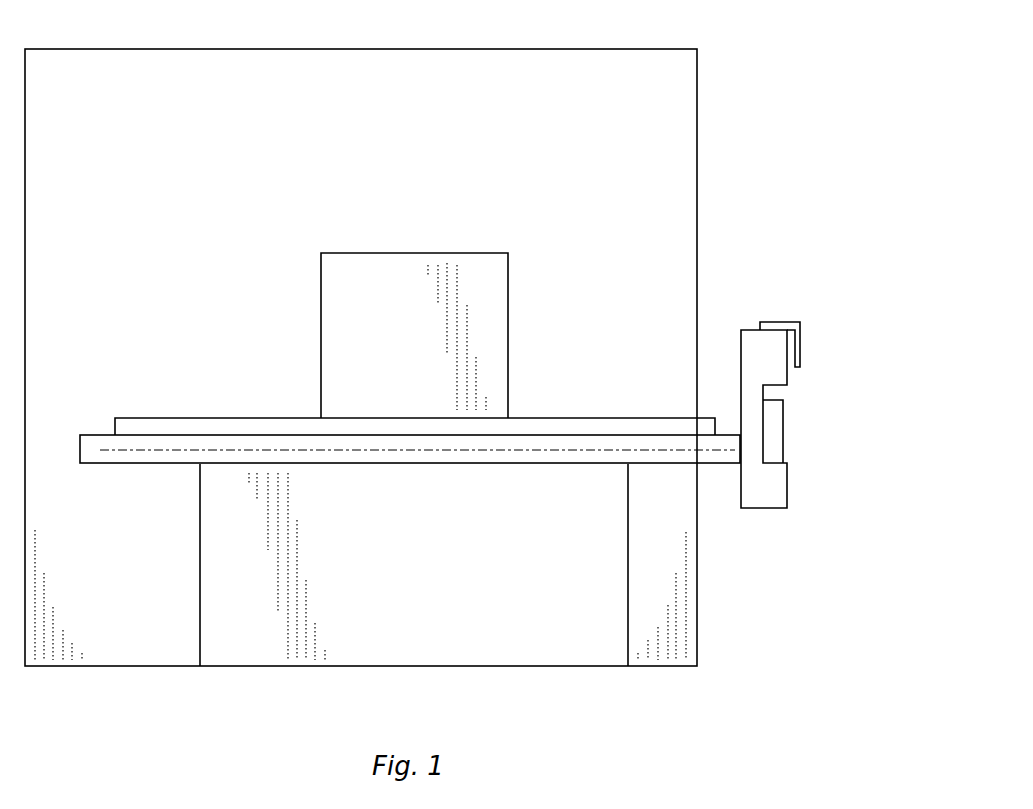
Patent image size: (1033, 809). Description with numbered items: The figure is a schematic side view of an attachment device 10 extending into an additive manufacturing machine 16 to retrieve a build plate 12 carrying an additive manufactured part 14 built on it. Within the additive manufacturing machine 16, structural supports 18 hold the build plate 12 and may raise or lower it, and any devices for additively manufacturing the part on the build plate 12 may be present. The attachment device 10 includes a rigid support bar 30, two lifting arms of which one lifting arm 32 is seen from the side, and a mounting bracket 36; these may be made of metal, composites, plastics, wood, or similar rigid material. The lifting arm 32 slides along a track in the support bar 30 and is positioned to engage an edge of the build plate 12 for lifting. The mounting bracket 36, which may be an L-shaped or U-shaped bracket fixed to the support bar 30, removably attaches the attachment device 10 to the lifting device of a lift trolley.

The attachment device 10 is at (808, 407).
The build plate 12 is at (204, 418).
The additive manufactured part 14 is at (383, 253).
The additive manufacturing machine 16 is at (708, 70).
The structural supports 18 is at (202, 605).
The support bar 30 is at (765, 500).
The lifting arm 32 is at (110, 466).
The mounting bracket 36 is at (799, 352).